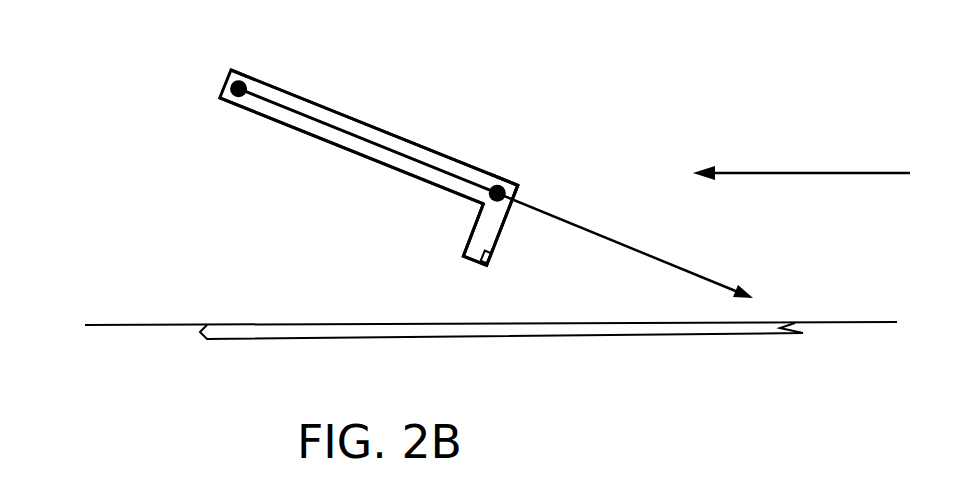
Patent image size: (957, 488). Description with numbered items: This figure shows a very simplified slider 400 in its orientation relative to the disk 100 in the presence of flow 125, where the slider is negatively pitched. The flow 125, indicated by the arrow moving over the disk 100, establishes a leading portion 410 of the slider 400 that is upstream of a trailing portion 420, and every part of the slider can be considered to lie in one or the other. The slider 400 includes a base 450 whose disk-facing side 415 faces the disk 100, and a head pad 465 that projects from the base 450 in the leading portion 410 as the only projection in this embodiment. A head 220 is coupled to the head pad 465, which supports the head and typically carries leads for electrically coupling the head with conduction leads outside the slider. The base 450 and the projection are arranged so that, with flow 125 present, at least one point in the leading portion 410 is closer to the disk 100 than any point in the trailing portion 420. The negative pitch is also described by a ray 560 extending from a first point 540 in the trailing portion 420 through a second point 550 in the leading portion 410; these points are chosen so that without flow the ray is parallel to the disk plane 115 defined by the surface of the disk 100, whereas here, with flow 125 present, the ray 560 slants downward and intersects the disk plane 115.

The disk 100 is at (501, 370).
The disk plane 115 is at (506, 286).
The flow 125 is at (801, 122).
The head 220 is at (404, 278).
The slider 400 is at (371, 161).
The leading portion 410 is at (553, 174).
The disk-facing side 415 is at (341, 175).
The trailing portion 420 is at (328, 97).
The base 450 is at (341, 160).
The head pad 465 is at (411, 225).
The first point 540 is at (203, 117).
The second point 550 is at (556, 143).
The ray 560 is at (672, 245).